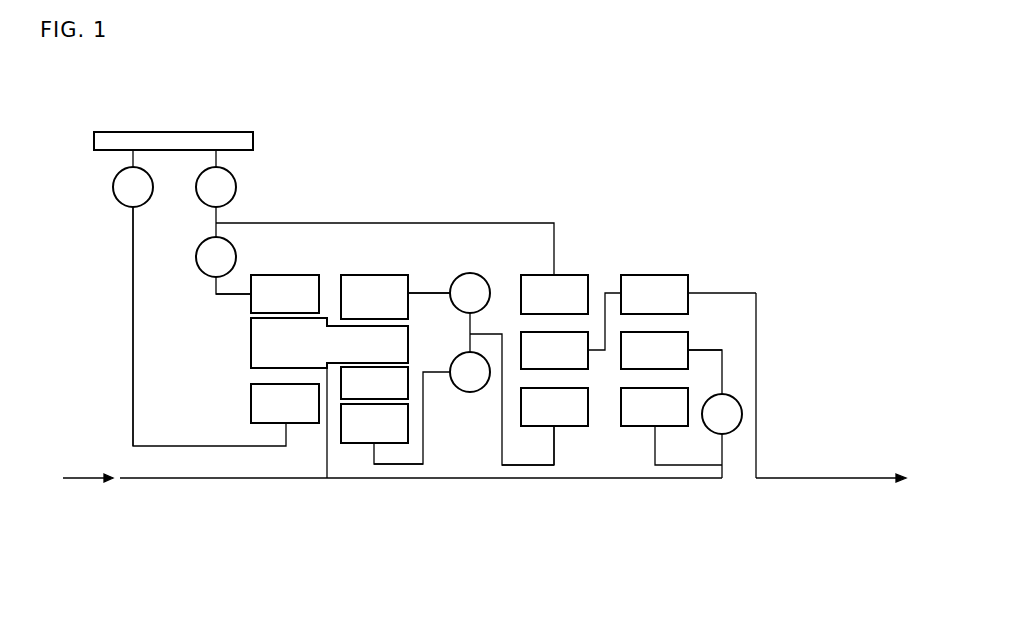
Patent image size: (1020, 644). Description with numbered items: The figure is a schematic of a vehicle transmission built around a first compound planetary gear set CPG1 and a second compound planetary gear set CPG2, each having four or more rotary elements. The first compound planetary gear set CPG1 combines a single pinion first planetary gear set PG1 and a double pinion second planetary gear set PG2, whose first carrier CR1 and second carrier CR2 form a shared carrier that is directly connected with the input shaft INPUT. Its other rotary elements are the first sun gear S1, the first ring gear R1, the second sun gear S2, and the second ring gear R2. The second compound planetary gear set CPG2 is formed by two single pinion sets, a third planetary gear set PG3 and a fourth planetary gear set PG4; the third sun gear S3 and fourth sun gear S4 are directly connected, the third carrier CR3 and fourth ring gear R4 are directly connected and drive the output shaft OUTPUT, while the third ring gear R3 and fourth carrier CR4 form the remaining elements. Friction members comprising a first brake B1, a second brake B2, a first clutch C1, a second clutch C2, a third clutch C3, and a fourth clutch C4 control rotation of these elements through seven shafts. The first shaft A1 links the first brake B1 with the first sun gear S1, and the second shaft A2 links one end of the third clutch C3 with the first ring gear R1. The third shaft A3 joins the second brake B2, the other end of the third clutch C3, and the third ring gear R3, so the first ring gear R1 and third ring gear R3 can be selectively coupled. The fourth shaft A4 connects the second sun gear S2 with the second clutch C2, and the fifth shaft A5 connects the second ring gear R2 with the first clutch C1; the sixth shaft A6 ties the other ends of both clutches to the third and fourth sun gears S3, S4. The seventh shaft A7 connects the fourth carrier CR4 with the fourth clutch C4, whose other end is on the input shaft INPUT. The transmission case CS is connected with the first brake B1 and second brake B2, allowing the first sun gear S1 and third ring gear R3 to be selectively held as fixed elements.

The transmission case CS is at (174, 132).
The first brake B1 is at (199, 298).
The second brake B2 is at (216, 193).
The first clutch C1 is at (470, 312).
The second clutch C2 is at (502, 399).
The third clutch C3 is at (223, 265).
The fourth clutch C4 is at (722, 436).
The first ring gear R1 is at (285, 294).
The second ring gear R2 is at (395, 297).
The third ring gear R3 is at (554, 294).
The fourth ring gear R4 is at (688, 294).
The first carrier CR1 is at (329, 343).
The second carrier CR2 is at (374, 366).
The third carrier CR3 is at (571, 331).
The fourth carrier CR4 is at (671, 363).
The first sun gear S1 is at (285, 403).
The second sun gear S2 is at (395, 418).
The third sun gear S3 is at (554, 426).
The fourth sun gear S4 is at (671, 426).
The first shaft A1 is at (133, 357).
The second shaft A2 is at (228, 296).
The third shaft A3 is at (352, 222).
The fourth shaft A4 is at (432, 464).
The fifth shaft A5 is at (427, 292).
The sixth shaft A6 is at (526, 467).
The seventh shaft A7 is at (704, 350).
The first planetary gear set PG1 is at (299, 440).
The second planetary gear set PG2 is at (363, 458).
The third planetary gear set PG3 is at (579, 440).
The fourth planetary gear set PG4 is at (672, 440).
The first compound planetary gear set CPG1 is at (388, 558).
The second compound planetary gear set CPG2 is at (692, 561).
The input shaft INPUT is at (214, 478).
The output shaft OUTPUT is at (756, 357).